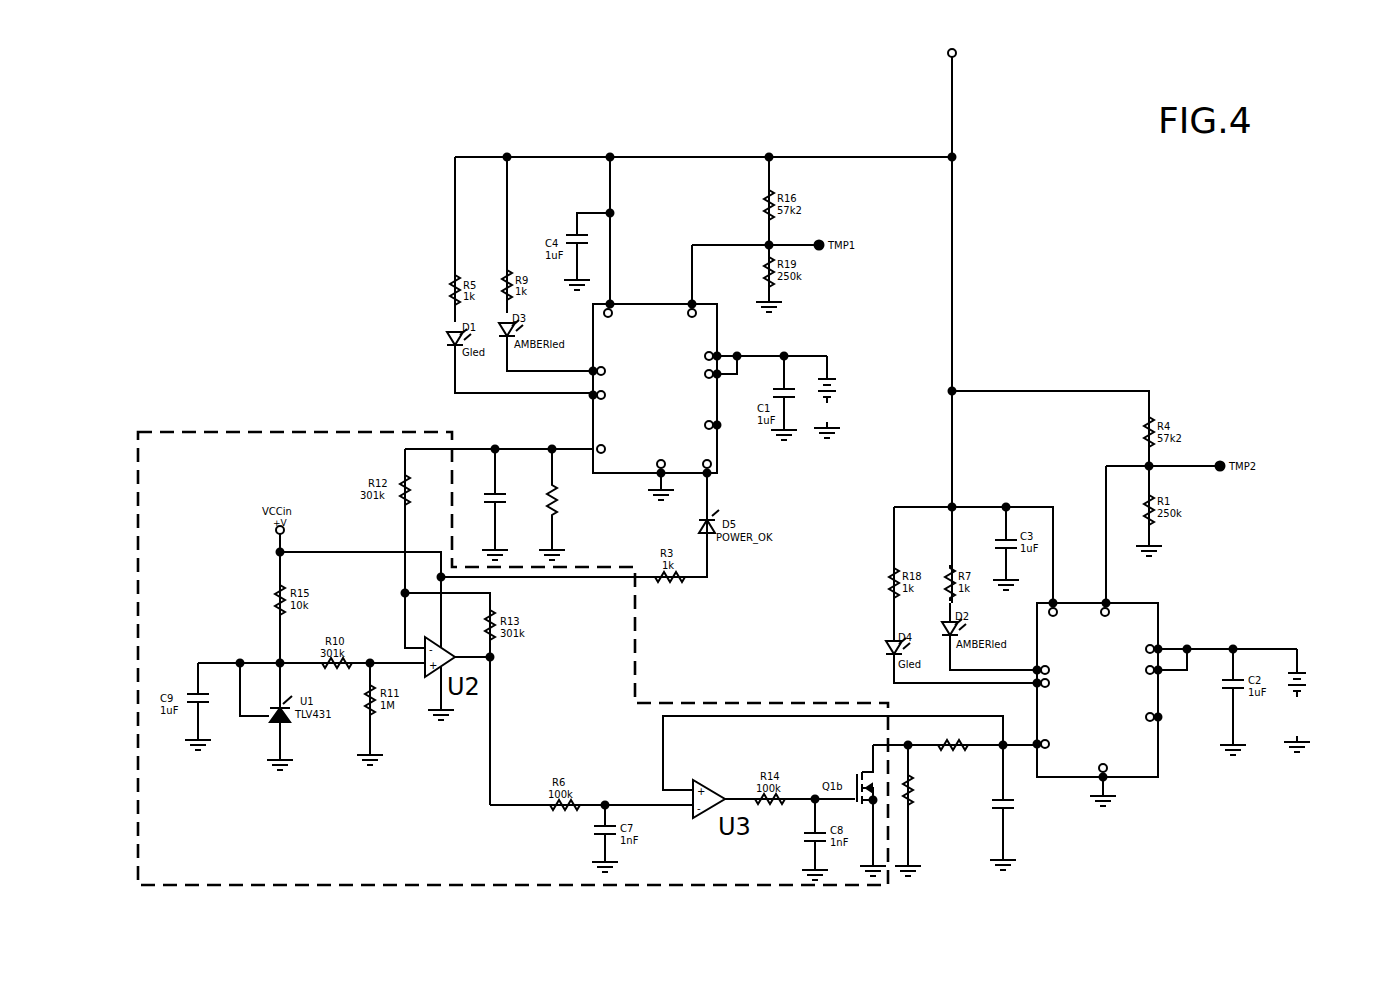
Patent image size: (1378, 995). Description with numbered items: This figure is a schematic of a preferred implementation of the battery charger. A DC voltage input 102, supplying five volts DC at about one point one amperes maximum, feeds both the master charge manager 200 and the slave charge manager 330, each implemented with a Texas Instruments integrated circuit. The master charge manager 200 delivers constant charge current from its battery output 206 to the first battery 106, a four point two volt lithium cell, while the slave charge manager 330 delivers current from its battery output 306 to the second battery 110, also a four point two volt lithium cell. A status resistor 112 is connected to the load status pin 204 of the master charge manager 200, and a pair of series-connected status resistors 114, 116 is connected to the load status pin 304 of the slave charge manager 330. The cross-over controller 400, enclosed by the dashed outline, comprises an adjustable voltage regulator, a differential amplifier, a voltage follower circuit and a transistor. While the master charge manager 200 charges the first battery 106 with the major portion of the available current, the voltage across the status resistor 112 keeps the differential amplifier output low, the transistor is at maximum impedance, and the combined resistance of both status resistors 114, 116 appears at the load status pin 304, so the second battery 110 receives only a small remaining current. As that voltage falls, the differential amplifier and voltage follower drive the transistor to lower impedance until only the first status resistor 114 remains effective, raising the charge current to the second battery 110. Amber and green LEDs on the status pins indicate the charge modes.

The DC voltage input 102 is at (952, 96).
The master charge manager 200 is at (630, 303).
The load status pin 204 is at (593, 449).
The battery output 206 is at (722, 358).
The first battery 106 is at (835, 362).
The status resistor 112 is at (557, 500).
The slave charge manager 330 is at (1133, 602).
The battery output 306 is at (1160, 648).
The second battery 110 is at (1306, 660).
The cross-over controller 400 is at (313, 432).
The load status pin 304 is at (1037, 744).
The status resistor 114 is at (893, 748).
The status resistor 116 is at (916, 806).